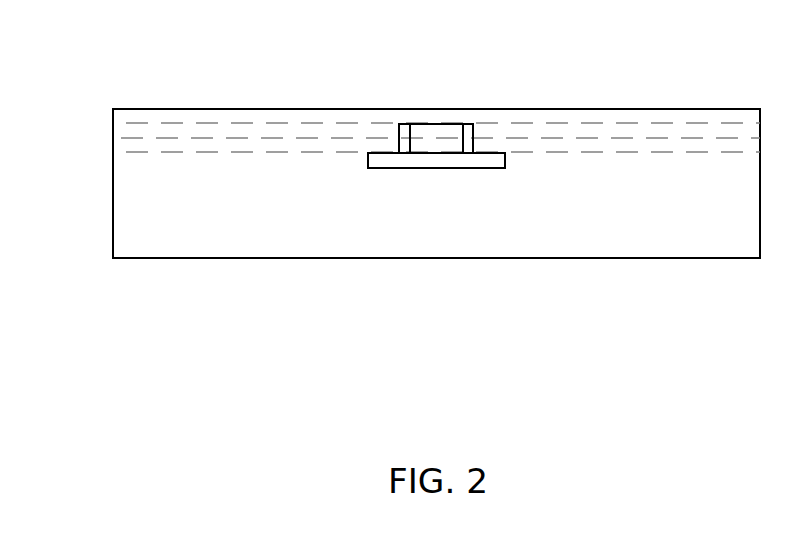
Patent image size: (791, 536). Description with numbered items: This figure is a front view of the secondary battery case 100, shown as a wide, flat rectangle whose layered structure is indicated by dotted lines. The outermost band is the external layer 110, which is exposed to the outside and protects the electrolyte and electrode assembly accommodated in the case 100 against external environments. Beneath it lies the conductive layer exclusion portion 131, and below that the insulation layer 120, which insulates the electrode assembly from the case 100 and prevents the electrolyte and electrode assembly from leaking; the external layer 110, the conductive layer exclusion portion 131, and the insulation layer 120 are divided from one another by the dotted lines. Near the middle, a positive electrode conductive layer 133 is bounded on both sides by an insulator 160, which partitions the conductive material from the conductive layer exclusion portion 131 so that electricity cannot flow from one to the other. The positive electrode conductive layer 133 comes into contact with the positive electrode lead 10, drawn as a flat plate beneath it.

The case 100 is at (721, 78).
The external layer 110 is at (119, 118).
The conductive layer exclusion portion 131 is at (119, 129).
The insulation layer 120 is at (119, 146).
The insulator 160 is at (468, 125).
The positive electrode conductive layer 133 is at (429, 146).
The positive electrode lead 10 is at (476, 163).